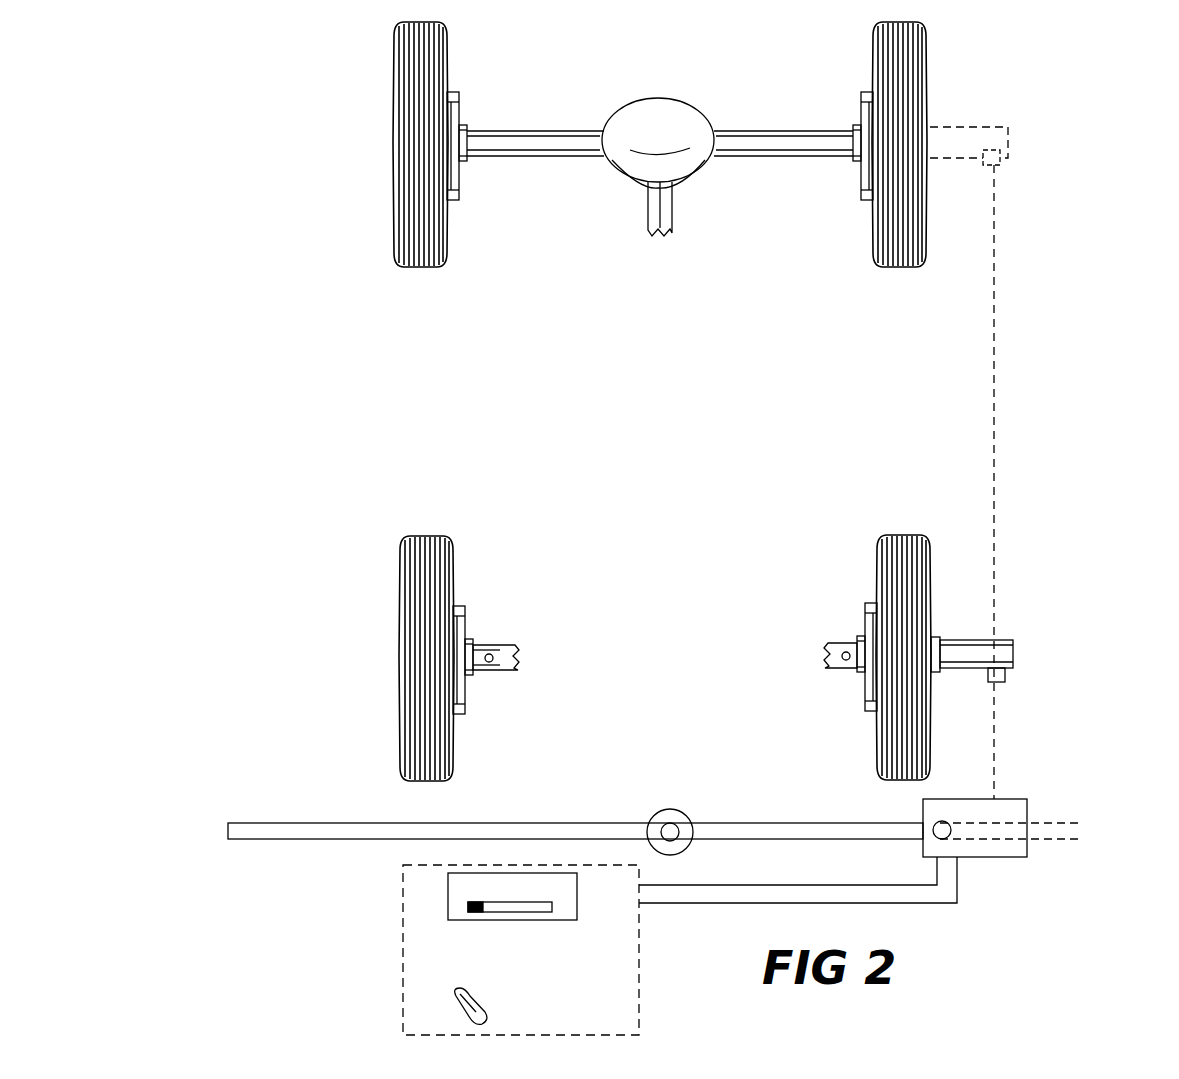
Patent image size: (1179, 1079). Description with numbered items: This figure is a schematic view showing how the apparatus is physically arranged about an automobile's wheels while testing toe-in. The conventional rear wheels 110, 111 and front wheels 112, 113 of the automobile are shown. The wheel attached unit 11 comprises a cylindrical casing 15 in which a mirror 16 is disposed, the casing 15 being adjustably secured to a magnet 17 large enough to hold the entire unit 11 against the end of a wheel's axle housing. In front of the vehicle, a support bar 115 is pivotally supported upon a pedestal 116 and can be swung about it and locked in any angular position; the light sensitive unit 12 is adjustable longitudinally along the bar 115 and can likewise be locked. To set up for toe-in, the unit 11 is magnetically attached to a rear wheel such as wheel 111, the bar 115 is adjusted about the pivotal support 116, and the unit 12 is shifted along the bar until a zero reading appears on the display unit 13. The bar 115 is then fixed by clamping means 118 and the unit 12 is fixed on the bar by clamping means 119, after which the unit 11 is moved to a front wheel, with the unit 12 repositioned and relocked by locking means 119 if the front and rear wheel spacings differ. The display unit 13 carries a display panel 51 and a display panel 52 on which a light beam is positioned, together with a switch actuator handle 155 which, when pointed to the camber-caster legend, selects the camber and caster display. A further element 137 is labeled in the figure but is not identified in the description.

The wheel attached unit 11 is at (985, 108).
The light sensitive unit 12 is at (1008, 803).
The display unit 13 is at (403, 940).
The cylindrical casing 15 is at (1012, 645).
The mirror 16 is at (1006, 675).
The magnet 17 is at (937, 640).
The display panel 51 is at (577, 908).
The display panel 52 is at (468, 906).
The rear wheel 110 is at (395, 66).
The rear wheel 111 is at (873, 42).
The front wheel 112 is at (400, 562).
The front wheel 113 is at (877, 560).
The support bar 115 is at (815, 826).
The pedestal 116 is at (680, 822).
The clamping means 118 is at (668, 822).
The clamping means 119 is at (945, 838).
The control knob 137 is at (605, 1078).
The actuator handle 155 is at (462, 1010).